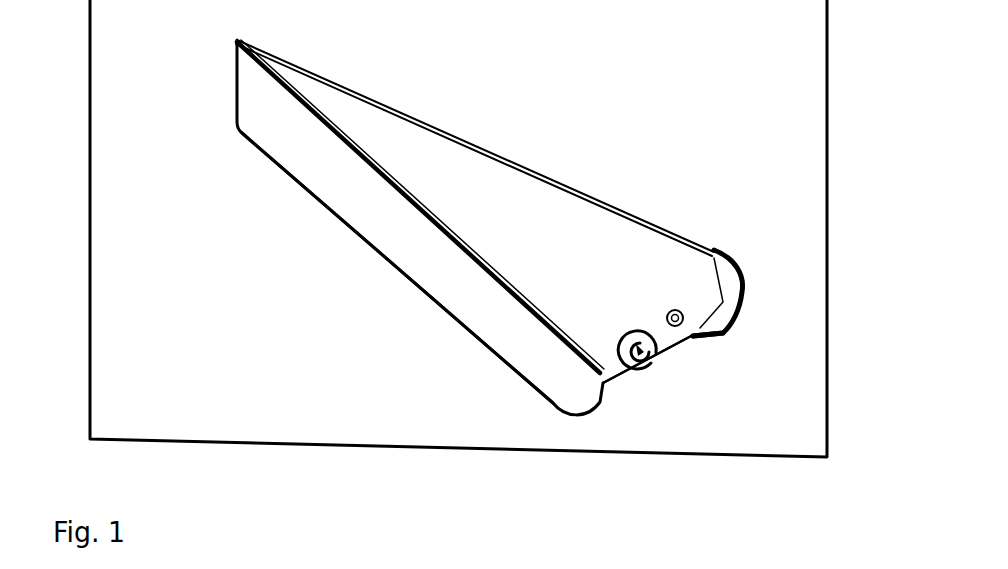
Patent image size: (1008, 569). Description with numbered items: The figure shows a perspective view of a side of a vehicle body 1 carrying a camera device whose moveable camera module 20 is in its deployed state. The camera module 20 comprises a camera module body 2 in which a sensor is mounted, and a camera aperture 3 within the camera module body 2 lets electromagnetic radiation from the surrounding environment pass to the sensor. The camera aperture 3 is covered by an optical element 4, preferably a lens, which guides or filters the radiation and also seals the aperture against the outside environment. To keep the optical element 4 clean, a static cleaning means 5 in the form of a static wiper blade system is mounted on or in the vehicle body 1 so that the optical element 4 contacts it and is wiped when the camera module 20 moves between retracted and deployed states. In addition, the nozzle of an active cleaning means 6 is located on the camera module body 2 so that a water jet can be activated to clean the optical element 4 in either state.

The vehicle body 1 is at (542, 150).
The camera module body 2 is at (262, 89).
The camera module 20 is at (350, 255).
The camera aperture 3 is at (662, 367).
The optical element 4 is at (648, 362).
The static cleaning means 5 is at (713, 251).
The active cleaning means 6 is at (687, 330).